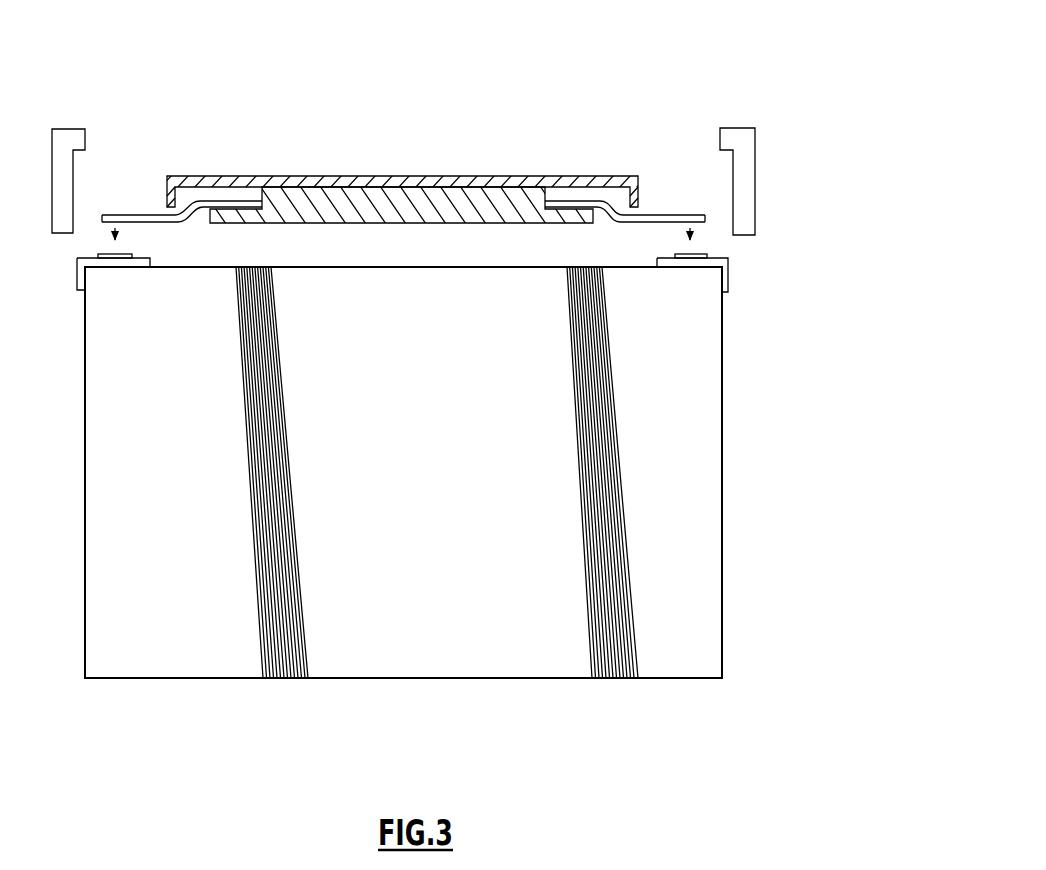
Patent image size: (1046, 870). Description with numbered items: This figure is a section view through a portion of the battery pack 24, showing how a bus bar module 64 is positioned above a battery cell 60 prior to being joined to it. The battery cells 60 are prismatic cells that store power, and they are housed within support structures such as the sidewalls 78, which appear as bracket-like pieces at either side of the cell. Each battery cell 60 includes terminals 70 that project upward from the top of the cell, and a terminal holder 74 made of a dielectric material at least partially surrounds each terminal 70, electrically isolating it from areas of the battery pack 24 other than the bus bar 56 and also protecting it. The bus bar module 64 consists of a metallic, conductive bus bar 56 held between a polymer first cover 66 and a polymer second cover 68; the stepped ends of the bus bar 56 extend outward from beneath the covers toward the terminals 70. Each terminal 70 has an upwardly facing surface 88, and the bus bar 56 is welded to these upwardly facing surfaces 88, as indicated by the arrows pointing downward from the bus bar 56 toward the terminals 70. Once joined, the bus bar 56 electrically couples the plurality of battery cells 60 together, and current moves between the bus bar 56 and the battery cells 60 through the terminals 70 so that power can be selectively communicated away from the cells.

The battery pack 24 is at (793, 78).
The bus bar 56 is at (141, 215).
The battery cells 60 is at (683, 600).
The bus bar module 64 is at (451, 130).
The first cover 66 is at (546, 176).
The second cover 68 is at (498, 212).
The terminals 70 is at (700, 253).
The terminal holder 74 is at (730, 283).
The sidewalls 78 is at (756, 165).
The upwardly facing surface 88 is at (127, 255).